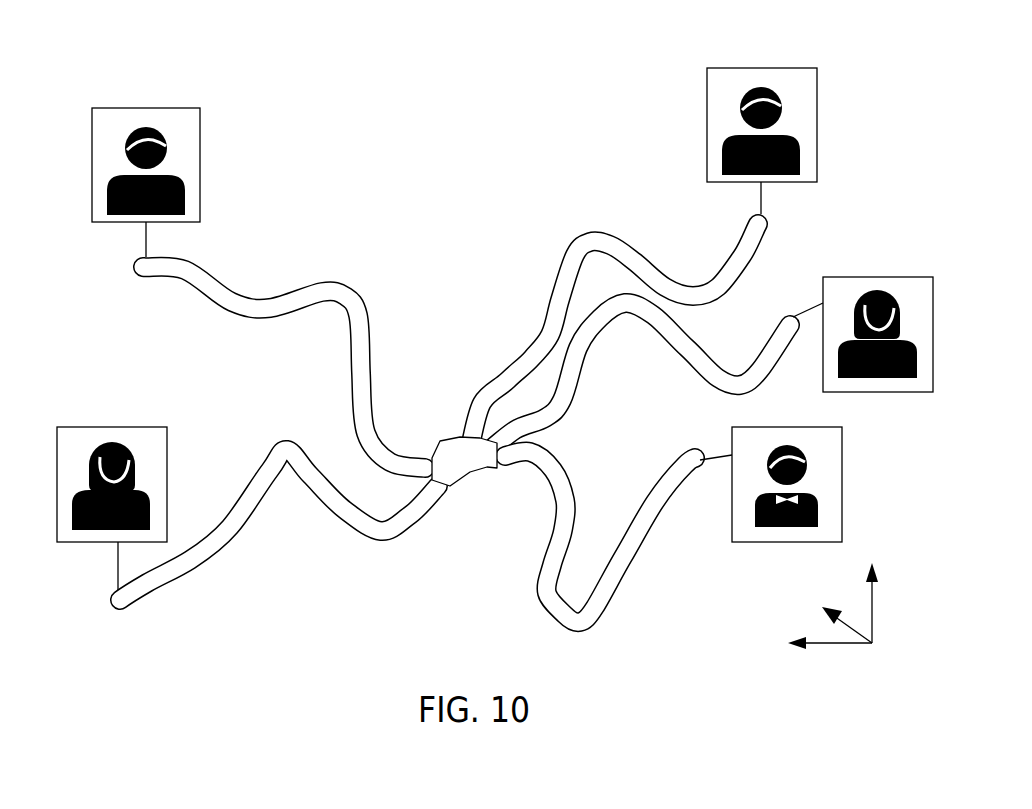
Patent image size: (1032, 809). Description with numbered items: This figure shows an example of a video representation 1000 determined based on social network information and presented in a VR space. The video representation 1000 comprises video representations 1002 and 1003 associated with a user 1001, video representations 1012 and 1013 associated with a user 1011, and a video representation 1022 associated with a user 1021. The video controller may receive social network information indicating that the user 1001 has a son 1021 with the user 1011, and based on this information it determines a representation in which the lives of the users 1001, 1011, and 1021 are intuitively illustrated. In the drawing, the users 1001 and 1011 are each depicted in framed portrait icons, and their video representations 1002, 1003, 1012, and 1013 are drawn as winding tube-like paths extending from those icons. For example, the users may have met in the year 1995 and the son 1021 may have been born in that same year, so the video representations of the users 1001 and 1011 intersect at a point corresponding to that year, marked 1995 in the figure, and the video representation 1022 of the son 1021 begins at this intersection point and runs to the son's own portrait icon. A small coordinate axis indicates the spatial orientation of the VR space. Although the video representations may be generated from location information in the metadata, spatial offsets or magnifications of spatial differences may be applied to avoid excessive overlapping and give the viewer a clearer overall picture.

The video representation 1000 is at (279, 78).
The user 1001 is at (112, 108).
The video representation 1002 is at (320, 286).
The video representation 1003 is at (592, 232).
The user 1011 is at (90, 427).
The video representation 1012 is at (248, 486).
The video representation 1013 is at (657, 340).
The son 1021 is at (842, 473).
The video representation 1022 is at (648, 518).
The year of meeting 1995 is at (470, 474).